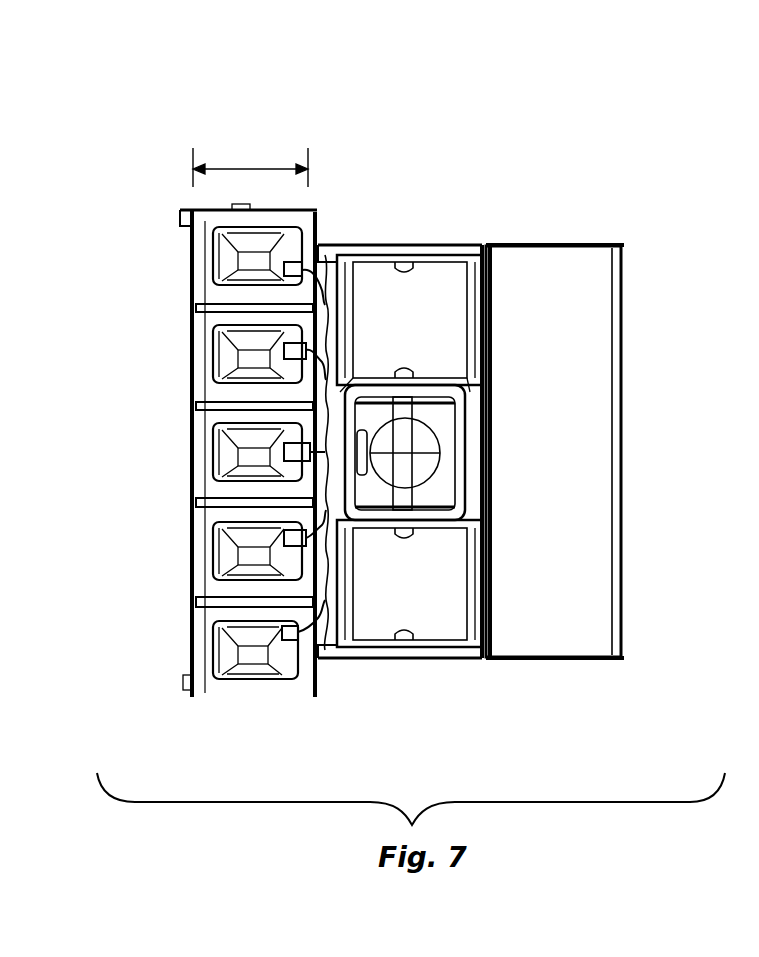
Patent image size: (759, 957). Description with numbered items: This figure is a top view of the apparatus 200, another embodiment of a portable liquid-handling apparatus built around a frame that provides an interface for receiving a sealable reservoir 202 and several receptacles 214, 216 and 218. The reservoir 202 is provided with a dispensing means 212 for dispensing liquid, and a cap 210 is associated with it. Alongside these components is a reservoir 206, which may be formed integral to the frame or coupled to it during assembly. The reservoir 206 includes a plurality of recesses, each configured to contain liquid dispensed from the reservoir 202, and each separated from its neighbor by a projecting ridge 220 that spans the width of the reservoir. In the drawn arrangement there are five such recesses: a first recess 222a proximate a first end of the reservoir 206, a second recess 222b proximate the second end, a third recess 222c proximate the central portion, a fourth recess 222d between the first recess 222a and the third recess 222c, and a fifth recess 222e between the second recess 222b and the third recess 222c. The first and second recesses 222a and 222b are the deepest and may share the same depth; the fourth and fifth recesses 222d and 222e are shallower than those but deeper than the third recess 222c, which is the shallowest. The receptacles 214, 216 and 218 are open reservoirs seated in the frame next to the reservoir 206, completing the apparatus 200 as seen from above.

The apparatus 200 is at (453, 153).
The reservoir 202 is at (440, 408).
The reservoir 206 is at (258, 700).
The cap 210 is at (418, 440).
The dispensing means 212 is at (367, 452).
The receptacle 214 is at (426, 329).
The receptacle 216 is at (426, 601).
The receptacle 218 is at (569, 316).
The projecting ridge 220 is at (198, 304).
The first recess 222a is at (207, 257).
The second recess 222b is at (210, 645).
The third recess 222c is at (210, 453).
The fourth recess 222d is at (210, 355).
The fifth recess 222e is at (210, 551).